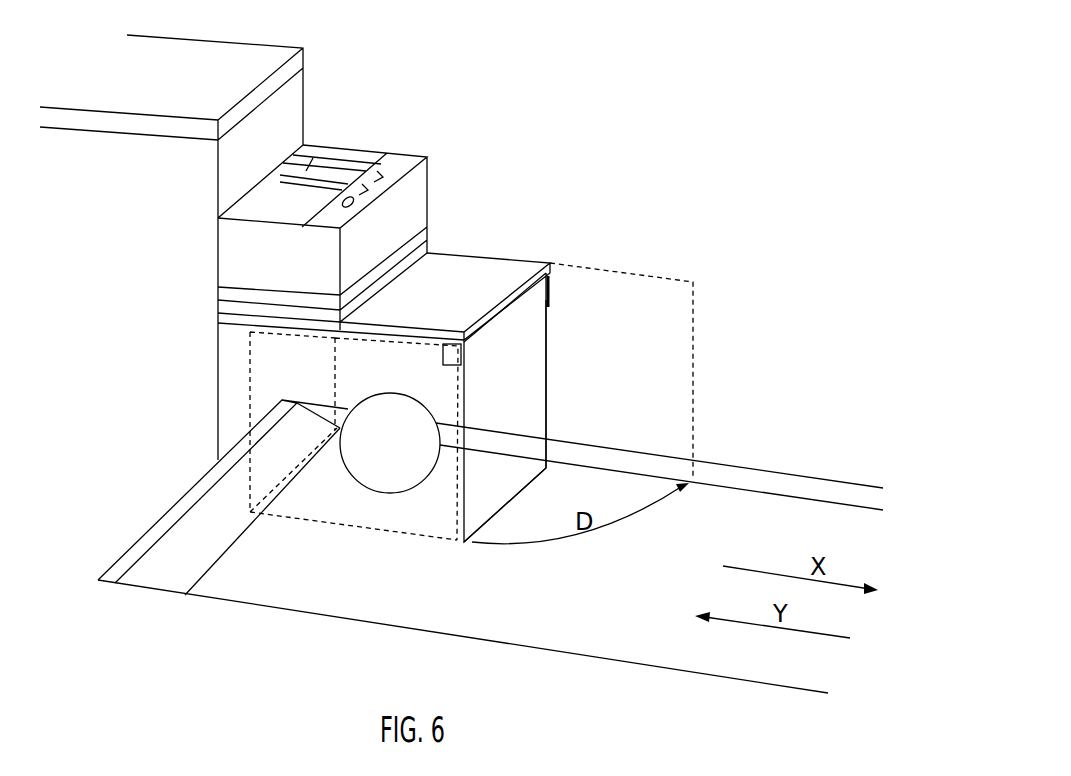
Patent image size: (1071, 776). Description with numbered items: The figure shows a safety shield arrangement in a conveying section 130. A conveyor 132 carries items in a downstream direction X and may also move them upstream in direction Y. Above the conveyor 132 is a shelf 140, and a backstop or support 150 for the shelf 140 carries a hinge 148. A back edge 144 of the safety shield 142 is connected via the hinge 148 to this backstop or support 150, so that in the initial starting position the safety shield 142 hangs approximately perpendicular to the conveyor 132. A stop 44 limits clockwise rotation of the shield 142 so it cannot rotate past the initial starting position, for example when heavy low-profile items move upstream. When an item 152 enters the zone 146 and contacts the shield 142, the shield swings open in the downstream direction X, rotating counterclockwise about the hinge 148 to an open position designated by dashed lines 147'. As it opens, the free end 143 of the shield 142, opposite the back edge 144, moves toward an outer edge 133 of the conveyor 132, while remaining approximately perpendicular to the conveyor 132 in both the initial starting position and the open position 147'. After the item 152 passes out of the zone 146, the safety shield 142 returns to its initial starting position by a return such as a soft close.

The shelf 140 is at (512, 267).
The hinge 148 is at (550, 293).
The open position 147' is at (666, 363).
The safety shield 142 is at (532, 335).
The back edge 144 is at (547, 422).
The stop 44 is at (455, 350).
The zone 146 is at (366, 532).
The backstop or support 150 is at (384, 381).
The item 152 is at (410, 460).
The conveyor 132 is at (604, 590).
The outer edge 133 is at (656, 482).
The free end 143 is at (467, 500).
The conveying section 130 is at (770, 378).